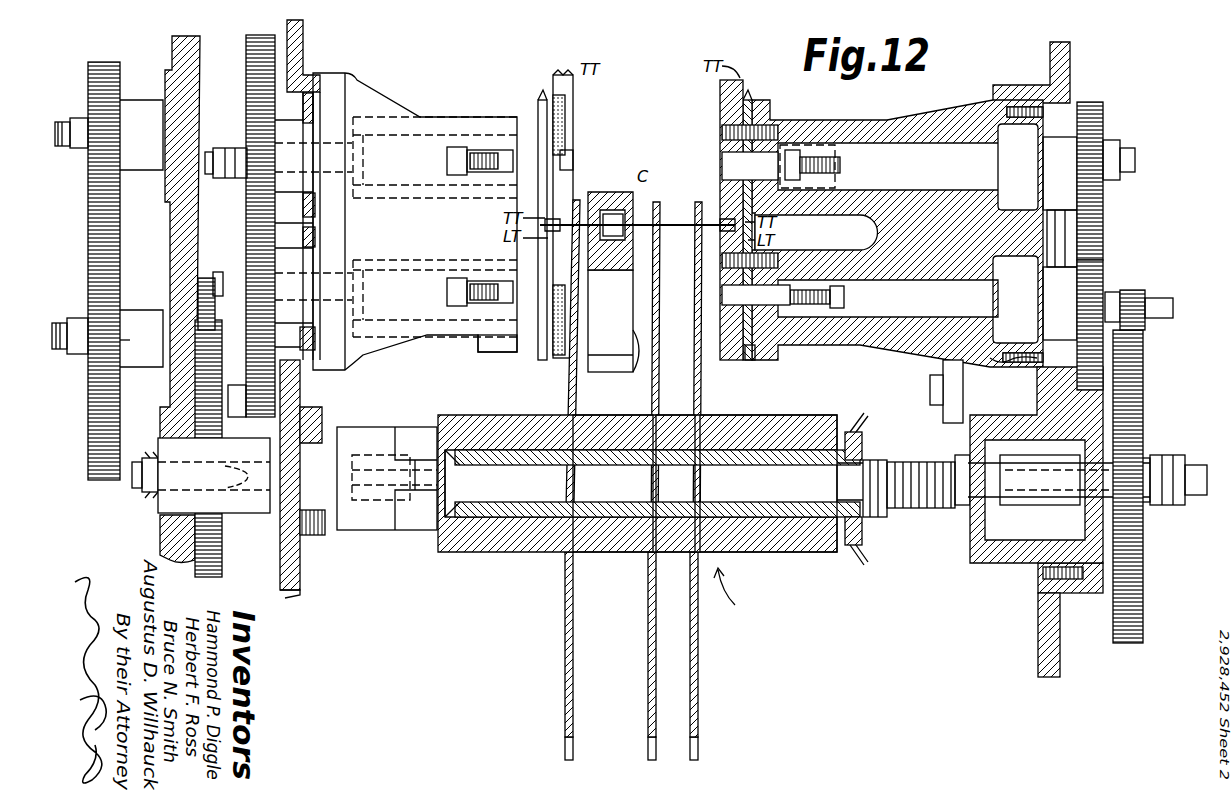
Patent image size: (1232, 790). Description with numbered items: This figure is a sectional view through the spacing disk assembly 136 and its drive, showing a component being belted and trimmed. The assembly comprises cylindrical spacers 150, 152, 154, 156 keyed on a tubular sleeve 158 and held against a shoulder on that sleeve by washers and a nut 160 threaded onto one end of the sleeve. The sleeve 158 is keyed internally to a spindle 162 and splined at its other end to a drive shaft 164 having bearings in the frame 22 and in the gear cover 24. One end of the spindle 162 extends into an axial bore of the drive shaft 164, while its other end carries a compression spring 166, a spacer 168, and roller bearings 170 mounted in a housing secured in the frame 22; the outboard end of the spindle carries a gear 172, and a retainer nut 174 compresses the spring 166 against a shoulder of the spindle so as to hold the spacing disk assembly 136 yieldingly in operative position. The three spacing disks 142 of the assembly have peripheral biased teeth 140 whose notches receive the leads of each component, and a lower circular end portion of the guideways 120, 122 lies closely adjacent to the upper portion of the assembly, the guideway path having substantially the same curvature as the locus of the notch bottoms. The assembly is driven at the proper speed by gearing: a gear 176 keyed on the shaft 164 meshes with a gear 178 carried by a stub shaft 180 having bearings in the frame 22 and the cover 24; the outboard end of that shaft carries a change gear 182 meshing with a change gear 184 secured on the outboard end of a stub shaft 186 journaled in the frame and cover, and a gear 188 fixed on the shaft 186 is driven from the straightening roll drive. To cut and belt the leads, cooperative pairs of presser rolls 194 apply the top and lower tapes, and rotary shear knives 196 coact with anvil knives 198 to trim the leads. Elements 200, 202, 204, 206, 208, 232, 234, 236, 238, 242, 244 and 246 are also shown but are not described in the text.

The frame 22 is at (298, 575).
The gear cover 24 is at (172, 218).
The guideway 120 is at (598, 200).
The guideway 122 is at (638, 368).
The spacing disk assembly 136 is at (742, 593).
The biased teeth 140 is at (578, 205).
The spacing disks 142 is at (565, 590).
The cylindrical spacer 150 is at (446, 550).
The cylindrical spacer 152 is at (583, 554).
The cylindrical spacer 154 is at (676, 554).
The cylindrical spacer 156 is at (758, 553).
The tubular sleeve 158 is at (869, 519).
The nut 160 is at (860, 447).
The spindle 162 is at (1195, 467).
The drive shaft 164 is at (133, 492).
The compression spring 166 is at (921, 471).
The spacer 168 is at (961, 462).
The roller bearings 170 is at (1066, 510).
The gear 172 is at (1143, 618).
The retainer nut 174 is at (1180, 512).
The gear 176 is at (221, 556).
The gear 178 is at (210, 280).
The stub shaft 180 is at (63, 320).
The change gear 182 is at (87, 412).
The change gear 184 is at (106, 62).
The stub shaft 186 is at (63, 149).
The gear 188 is at (253, 38).
The presser rolls 194 is at (575, 92).
The rotary shear knives 196 is at (540, 98).
The anvil knives 198 is at (522, 354).
The drum 200 is at (421, 110).
The bolt 202 is at (372, 190).
The bolt 204 is at (372, 262).
The block 206 is at (574, 286).
The wire fitting 208 is at (628, 215).
The hub 232 is at (248, 238).
The bolt 234 is at (247, 178).
The hub 236 is at (241, 417).
The nut 238 is at (1150, 305).
The bearing housing 242 is at (1046, 412).
The gear 244 is at (1104, 270).
The gear 246 is at (1106, 110).